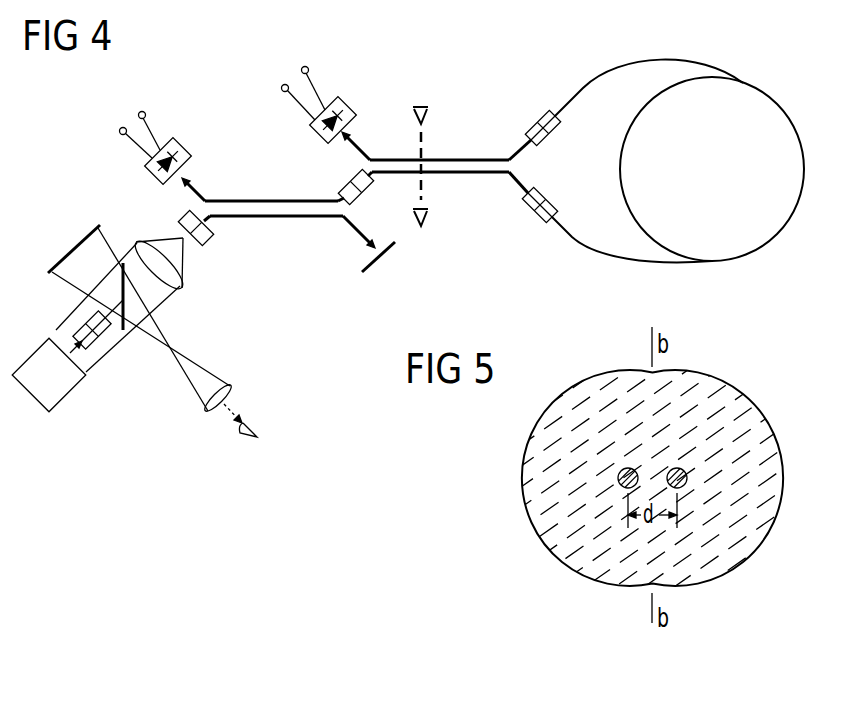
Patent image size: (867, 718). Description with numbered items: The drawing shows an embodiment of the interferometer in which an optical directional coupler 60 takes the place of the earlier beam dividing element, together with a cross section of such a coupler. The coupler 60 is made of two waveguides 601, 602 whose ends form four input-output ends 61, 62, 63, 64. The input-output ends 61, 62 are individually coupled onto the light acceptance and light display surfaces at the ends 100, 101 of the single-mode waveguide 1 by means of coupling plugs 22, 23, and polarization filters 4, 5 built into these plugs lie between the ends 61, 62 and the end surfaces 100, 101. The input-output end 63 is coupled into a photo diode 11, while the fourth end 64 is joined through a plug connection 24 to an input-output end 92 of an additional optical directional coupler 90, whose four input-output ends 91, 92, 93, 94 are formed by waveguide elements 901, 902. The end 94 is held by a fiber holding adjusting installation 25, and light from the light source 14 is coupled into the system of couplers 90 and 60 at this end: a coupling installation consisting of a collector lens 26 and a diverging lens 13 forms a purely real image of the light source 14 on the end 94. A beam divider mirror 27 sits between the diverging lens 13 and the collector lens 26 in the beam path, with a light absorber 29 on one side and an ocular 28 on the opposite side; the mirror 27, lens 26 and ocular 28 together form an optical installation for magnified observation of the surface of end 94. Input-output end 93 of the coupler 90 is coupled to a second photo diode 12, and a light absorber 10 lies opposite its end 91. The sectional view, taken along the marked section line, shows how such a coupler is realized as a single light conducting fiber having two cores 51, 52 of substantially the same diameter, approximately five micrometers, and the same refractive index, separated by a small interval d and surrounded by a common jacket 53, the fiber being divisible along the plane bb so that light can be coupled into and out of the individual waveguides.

In FIG. 4, the single-mode waveguide 1 is at (585, 83).
In FIG. 4, the polarization filter 4 is at (541, 194).
In FIG. 4, the polarization filter 5 is at (529, 135).
In FIG. 4, the light absorber 10 is at (387, 264).
In FIG. 4, the photo diode 11 is at (330, 105).
In FIG. 4, the photo diode 12 is at (168, 148).
In FIG. 4, the diverging lens 13 is at (81, 321).
In FIG. 4, the light source 14 is at (53, 378).
In FIG. 4, the coupling plug 22 is at (540, 223).
In FIG. 4, the coupling plug 23 is at (561, 130).
In FIG. 4, the plug connection 24 is at (338, 172).
In FIG. 4, the fiber holding adjusting installation 25 is at (193, 237).
In FIG. 4, the collector lens 26 is at (167, 269).
In FIG. 4, the beam divider mirror 27 is at (127, 332).
In FIG. 4, the ocular 28 is at (229, 386).
In FIG. 4, the light absorber 29 is at (74, 239).
In FIG. 5, the core 51 is at (625, 469).
In FIG. 5, the core 52 is at (680, 469).
In FIG. 5, the common jacket 53 is at (537, 502).
In FIG. 4, the optical directional coupler 60 is at (449, 164).
In FIG. 4, the input-output end 61 is at (532, 225).
In FIG. 4, the input-output end 62 is at (537, 137).
In FIG. 4, the input-output end 63 is at (350, 133).
In FIG. 4, the input-output end 64 is at (369, 201).
In FIG. 4, the additional optical directional coupler 90 is at (274, 207).
In FIG. 4, the input-output end 91 is at (370, 250).
In FIG. 4, the input-output end 92 is at (360, 193).
In FIG. 4, the input-output end 93 is at (190, 179).
In FIG. 4, the input-output end 94 is at (186, 243).
In FIG. 4, the end of the waveguide 100 is at (532, 213).
In FIG. 4, the end of the waveguide 101 is at (562, 141).
In FIG. 4, the waveguide 601 is at (482, 158).
In FIG. 4, the waveguide 602 is at (482, 175).
In FIG. 4, the waveguide element 901 is at (298, 198).
In FIG. 4, the waveguide element 902 is at (293, 218).